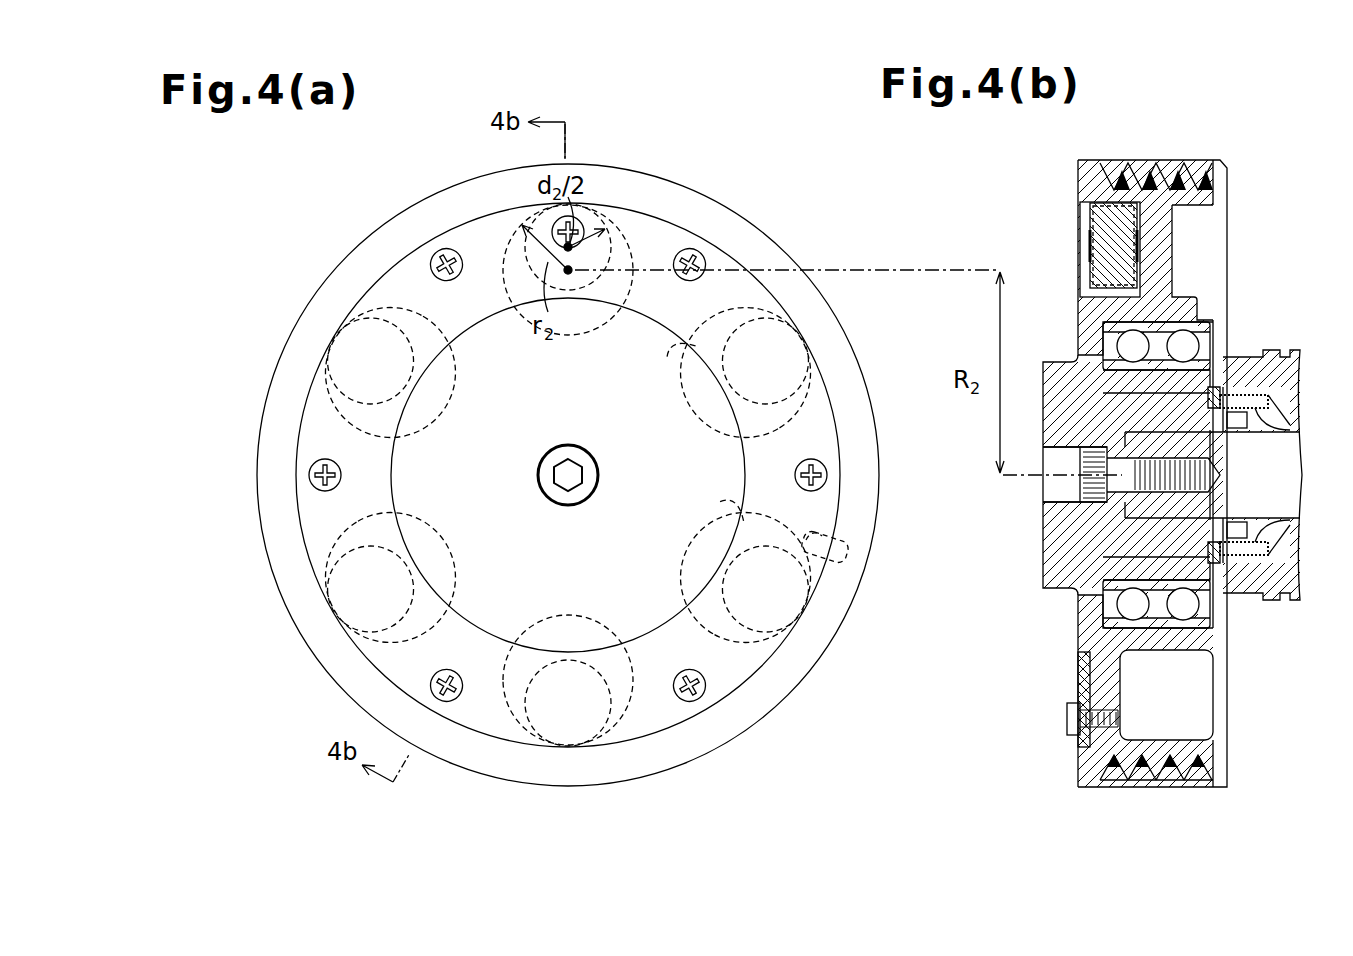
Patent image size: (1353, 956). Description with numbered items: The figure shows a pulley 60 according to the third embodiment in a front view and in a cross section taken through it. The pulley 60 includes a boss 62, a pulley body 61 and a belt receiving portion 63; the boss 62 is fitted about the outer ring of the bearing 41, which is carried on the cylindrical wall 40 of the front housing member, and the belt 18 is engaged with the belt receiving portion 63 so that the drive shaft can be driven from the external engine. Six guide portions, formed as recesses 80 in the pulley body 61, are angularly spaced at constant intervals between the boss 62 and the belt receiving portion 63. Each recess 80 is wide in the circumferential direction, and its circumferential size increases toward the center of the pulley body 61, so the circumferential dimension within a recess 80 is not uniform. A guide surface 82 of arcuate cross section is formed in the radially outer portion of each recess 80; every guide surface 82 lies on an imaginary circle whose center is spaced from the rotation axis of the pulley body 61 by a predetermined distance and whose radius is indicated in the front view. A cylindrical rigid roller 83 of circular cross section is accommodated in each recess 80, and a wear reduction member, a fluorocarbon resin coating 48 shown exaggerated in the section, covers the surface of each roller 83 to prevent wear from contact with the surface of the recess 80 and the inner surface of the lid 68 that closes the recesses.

In FIG. 4B, the belt 18 is at (1163, 777).
In FIG. 4B, the cylindrical wall 40 is at (1203, 380).
In FIG. 4B, the bearing 41 is at (1195, 343).
In FIG. 4B, the fluorocarbon resin coating 48 is at (1093, 268).
In FIG. 4A, the pulley 60 is at (738, 186).
In FIG. 4B, the pulley 60 is at (1235, 216).
In FIG. 4A, the pulley body 61 is at (758, 226).
In FIG. 4B, the pulley body 61 is at (1228, 262).
In FIG. 4B, the boss 62 is at (1198, 306).
In FIG. 4A, the belt receiving portion 63 is at (778, 250).
In FIG. 4B, the belt receiving portion 63 is at (1085, 182).
In FIG. 4A, the lid 68 is at (823, 426).
In FIG. 4B, the lid 68 is at (1078, 687).
In FIG. 4A, the recess 80 is at (740, 668).
In FIG. 4B, the recess 80 is at (1130, 268).
In FIG. 4A, the guide surface 82 is at (838, 524).
In FIG. 4B, the guide surface 82 is at (1088, 222).
In FIG. 4A, the roller 83 is at (830, 563).
In FIG. 4B, the roller 83 is at (1097, 240).